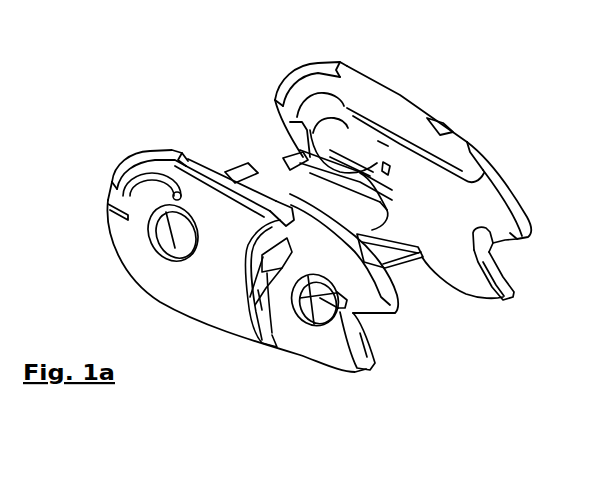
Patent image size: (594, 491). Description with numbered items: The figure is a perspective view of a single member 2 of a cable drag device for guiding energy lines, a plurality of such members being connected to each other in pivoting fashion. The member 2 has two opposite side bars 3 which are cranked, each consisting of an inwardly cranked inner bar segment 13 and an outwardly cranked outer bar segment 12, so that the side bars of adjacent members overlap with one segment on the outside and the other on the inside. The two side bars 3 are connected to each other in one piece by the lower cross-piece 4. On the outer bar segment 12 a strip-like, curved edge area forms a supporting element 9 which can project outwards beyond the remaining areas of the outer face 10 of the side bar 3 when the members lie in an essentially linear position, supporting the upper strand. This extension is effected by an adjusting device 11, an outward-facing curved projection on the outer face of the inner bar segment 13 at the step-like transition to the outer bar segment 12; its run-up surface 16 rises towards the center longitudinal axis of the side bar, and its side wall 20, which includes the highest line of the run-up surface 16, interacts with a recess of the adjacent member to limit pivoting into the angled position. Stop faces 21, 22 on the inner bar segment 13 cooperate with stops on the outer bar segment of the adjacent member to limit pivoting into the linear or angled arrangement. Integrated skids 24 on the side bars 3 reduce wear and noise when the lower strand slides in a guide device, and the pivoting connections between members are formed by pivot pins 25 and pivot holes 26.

The member 2 is at (98, 291).
The side bar 3 is at (113, 218).
The lower cross-piece 4 is at (408, 265).
The supporting element 9 is at (122, 163).
The outer face 10 is at (145, 250).
The adjusting device 11 is at (260, 307).
The outer bar segment 12 is at (150, 153).
The inner bar segment 13 is at (391, 280).
The run-up surface 16 is at (267, 255).
The side wall of the projection 20 is at (255, 270).
The stop face 21 is at (377, 360).
The stop face 22 is at (371, 313).
The skid 24 is at (265, 185).
The pivot pin 25 is at (323, 310).
The pivot hole 26 is at (170, 227).